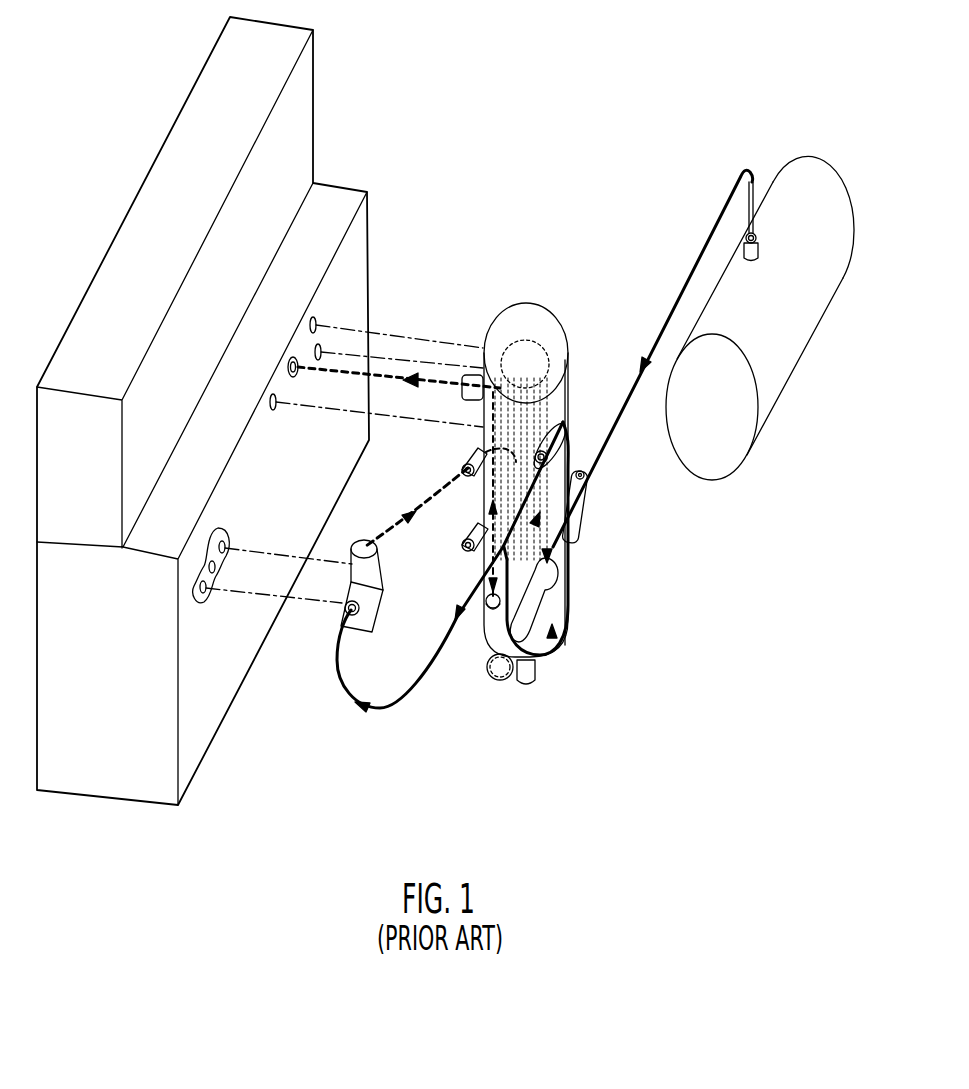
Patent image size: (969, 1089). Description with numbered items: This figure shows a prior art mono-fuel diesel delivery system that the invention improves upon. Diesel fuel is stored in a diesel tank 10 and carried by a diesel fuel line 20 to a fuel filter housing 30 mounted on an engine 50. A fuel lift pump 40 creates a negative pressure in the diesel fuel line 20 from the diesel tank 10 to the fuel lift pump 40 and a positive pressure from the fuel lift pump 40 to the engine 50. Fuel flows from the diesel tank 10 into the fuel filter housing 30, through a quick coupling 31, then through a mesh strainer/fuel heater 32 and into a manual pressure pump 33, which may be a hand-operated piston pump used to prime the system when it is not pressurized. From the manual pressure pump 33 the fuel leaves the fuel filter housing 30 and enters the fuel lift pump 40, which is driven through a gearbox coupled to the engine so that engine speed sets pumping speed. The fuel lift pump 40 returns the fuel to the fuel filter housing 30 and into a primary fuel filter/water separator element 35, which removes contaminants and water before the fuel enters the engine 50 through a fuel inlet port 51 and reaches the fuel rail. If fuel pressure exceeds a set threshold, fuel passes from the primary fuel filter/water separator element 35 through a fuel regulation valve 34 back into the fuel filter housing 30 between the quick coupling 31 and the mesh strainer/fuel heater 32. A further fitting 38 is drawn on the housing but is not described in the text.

The diesel tank 10 is at (797, 383).
The diesel fuel line 20 is at (690, 268).
The fuel filter housing 30 is at (570, 397).
The quick coupling 31 is at (584, 502).
The mesh strainer/fuel heater 32 is at (538, 677).
The manual pressure pump 33 is at (500, 687).
The fuel regulation valve 34 is at (487, 613).
The primary fuel filter/water separator element 35 is at (544, 347).
The cable guide 38 is at (467, 547).
The fuel lift pump 40 is at (370, 637).
The engine 50 is at (313, 90).
The fuel inlet port 51 is at (293, 358).